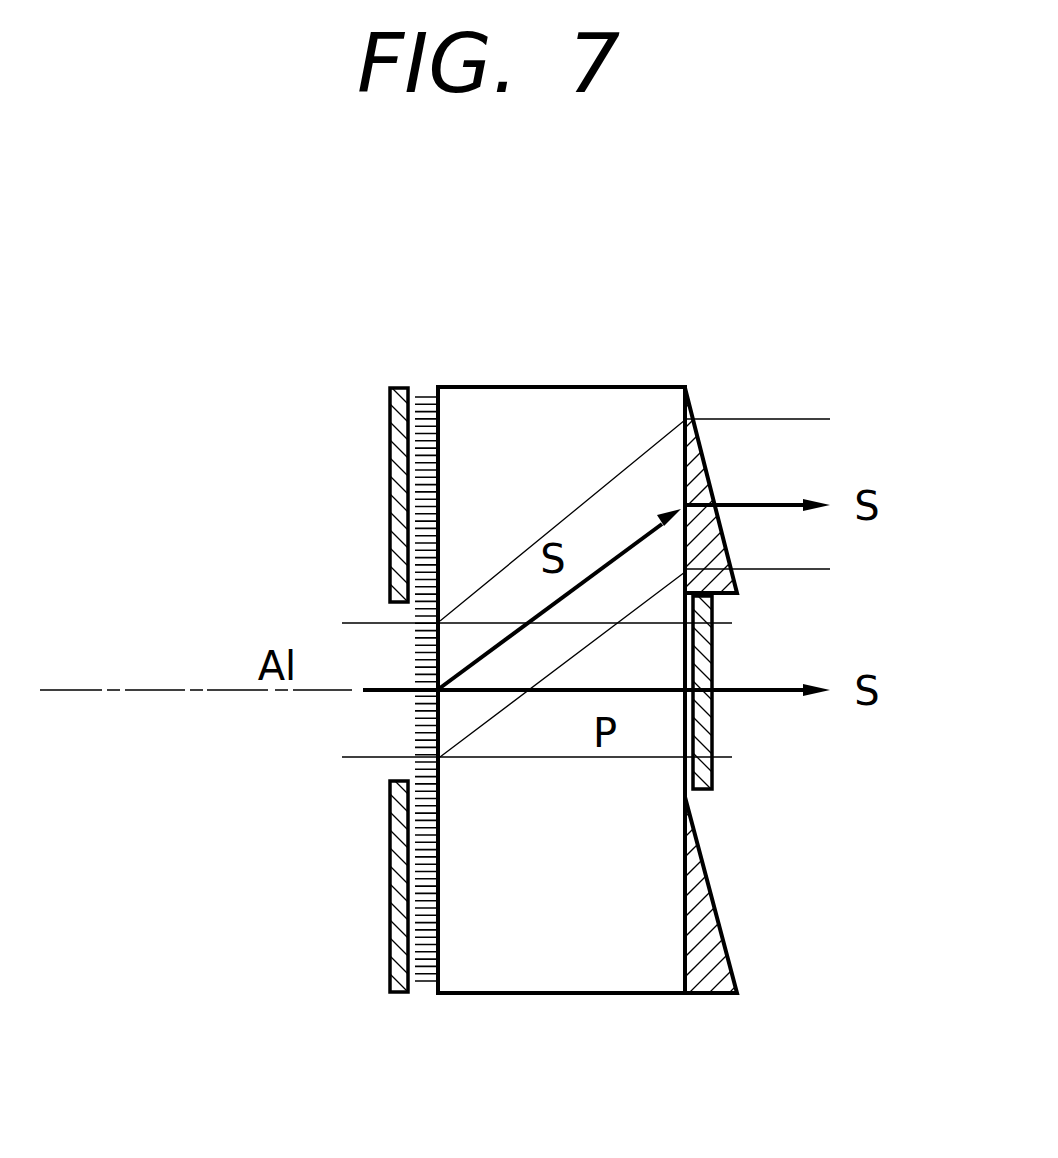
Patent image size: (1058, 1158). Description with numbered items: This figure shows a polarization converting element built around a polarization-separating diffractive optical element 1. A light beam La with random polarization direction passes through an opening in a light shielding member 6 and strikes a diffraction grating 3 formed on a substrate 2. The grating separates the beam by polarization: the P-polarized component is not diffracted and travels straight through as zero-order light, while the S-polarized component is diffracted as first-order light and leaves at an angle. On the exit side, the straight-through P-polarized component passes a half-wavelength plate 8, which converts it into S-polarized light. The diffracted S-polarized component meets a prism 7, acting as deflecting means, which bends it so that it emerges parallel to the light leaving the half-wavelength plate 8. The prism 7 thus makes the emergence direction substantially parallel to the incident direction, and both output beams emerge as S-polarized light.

The diffractive optical element 1 is at (662, 314).
The substrate 2 is at (622, 403).
The diffraction grating 3 is at (426, 393).
The light shielding member 6 is at (390, 843).
The prism 7 is at (708, 465).
The ½-wavelength plate 8 is at (713, 781).
The light beam La is at (158, 692).